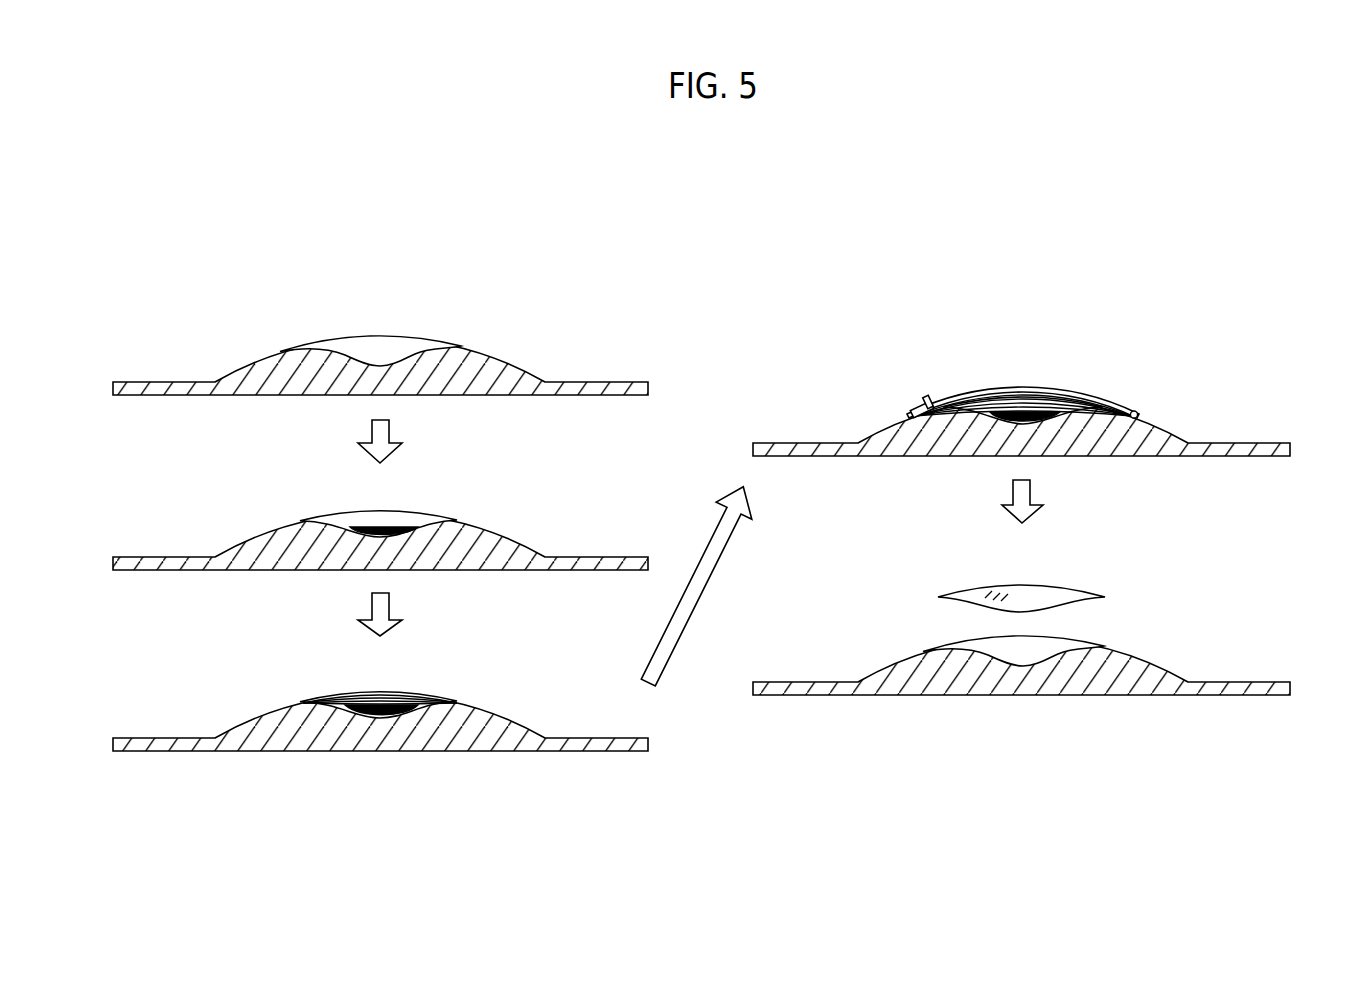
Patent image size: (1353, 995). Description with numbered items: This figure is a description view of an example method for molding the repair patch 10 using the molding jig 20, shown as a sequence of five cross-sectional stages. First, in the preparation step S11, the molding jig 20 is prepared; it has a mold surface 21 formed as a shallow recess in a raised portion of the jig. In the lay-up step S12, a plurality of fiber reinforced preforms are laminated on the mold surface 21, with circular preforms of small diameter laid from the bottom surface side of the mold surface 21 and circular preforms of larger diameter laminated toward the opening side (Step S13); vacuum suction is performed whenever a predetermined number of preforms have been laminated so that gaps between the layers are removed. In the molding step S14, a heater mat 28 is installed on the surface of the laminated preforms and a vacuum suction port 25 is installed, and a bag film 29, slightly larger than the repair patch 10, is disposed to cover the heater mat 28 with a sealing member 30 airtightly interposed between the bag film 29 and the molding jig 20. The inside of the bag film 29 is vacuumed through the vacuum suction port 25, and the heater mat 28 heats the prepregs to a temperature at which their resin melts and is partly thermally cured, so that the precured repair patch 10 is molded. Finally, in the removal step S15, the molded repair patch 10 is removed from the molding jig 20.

The repair patch 10 is at (1073, 580).
The molding jig 20 is at (258, 355).
The mold surface 21 is at (345, 357).
The vacuum suction port 25 is at (930, 397).
The heater mat 28 is at (1103, 399).
The bag film 29 is at (1029, 387).
The sealing member 30 is at (905, 410).
The preparation step S11 is at (380, 326).
The lay-up step S12 is at (546, 483).
The lamination step S13 is at (546, 665).
The molding step S14 is at (1021, 386).
The removal step S15 is at (1021, 613).